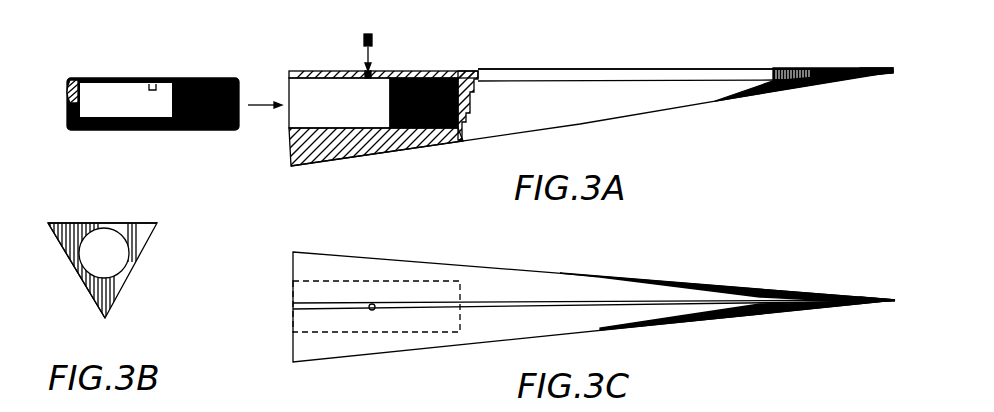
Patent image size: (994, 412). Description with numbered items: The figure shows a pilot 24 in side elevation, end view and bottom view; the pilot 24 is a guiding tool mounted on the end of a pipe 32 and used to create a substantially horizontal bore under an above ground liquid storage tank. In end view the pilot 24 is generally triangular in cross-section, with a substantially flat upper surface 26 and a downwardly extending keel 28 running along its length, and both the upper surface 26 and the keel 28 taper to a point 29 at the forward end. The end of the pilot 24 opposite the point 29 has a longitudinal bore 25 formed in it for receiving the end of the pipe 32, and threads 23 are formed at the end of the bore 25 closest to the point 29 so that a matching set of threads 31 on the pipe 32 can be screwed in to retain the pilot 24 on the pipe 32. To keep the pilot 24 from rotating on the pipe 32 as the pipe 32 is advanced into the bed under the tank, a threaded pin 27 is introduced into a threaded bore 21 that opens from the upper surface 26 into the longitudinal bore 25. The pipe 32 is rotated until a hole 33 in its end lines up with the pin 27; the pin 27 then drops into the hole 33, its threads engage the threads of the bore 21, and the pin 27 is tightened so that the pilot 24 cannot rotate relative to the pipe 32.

In FIG. 3A, the threaded bore 21 is at (369, 78).
In FIG. 3A, the threads 23 is at (472, 70).
In FIG. 3B, the pilot 24 is at (134, 216).
In FIG. 3A, the longitudinal bore 25 is at (355, 128).
In FIG. 3B, the longitudinal bore 25 is at (118, 264).
In FIG. 3C, the longitudinal bore 25 is at (375, 278).
In FIG. 3A, the upper surface 26 is at (563, 68).
In FIG. 3B, the upper surface 26 is at (82, 222).
In FIG. 3A, the threaded pin 27 is at (373, 37).
In FIG. 3A, the keel 28 is at (524, 110).
In FIG. 3B, the keel 28 is at (82, 283).
In FIG. 3C, the keel 28 is at (512, 287).
In FIG. 3A, the point 29 is at (893, 72).
In FIG. 3C, the point 29 is at (895, 301).
In FIG. 3A, the threads 31 is at (200, 78).
In FIG. 3A, the pipe 32 is at (97, 78).
In FIG. 3A, the hole 33 is at (151, 82).